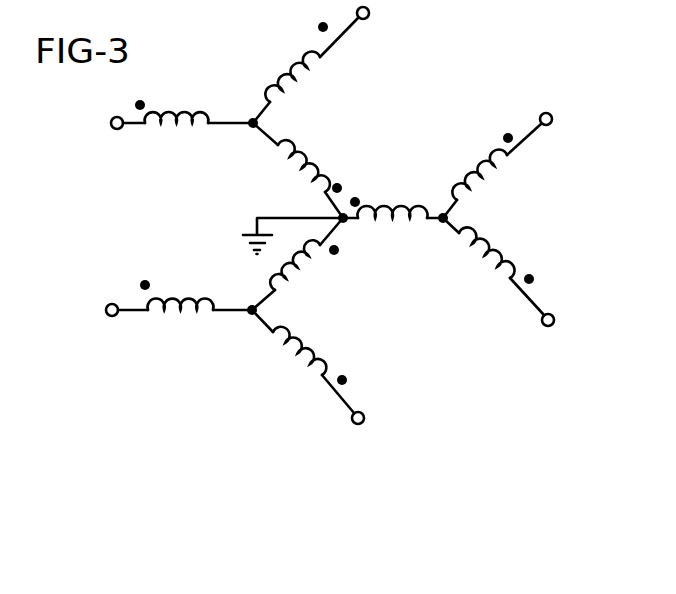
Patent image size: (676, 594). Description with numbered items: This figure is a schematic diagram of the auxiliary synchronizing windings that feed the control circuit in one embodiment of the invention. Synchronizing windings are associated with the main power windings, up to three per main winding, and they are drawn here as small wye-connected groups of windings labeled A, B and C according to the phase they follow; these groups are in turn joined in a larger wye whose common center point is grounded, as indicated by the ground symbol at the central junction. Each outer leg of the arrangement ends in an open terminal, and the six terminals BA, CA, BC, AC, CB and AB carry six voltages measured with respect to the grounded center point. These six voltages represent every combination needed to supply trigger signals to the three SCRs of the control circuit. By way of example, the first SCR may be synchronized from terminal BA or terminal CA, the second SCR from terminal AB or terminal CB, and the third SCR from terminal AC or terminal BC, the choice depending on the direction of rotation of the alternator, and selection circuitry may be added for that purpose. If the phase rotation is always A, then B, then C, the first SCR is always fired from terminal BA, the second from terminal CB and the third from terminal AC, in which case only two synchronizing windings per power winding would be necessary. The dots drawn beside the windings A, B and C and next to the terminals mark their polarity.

The phase A synchronizing winding A is at (394, 310).
The phase B synchronizing winding B is at (286, 197).
The phase C synchronizing winding C is at (386, 167).
The terminal BA is at (105, 107).
The terminal CA is at (382, 11).
The terminal BC is at (100, 299).
The terminal AC is at (374, 427).
The terminal CB is at (560, 106).
The terminal AB is at (564, 328).